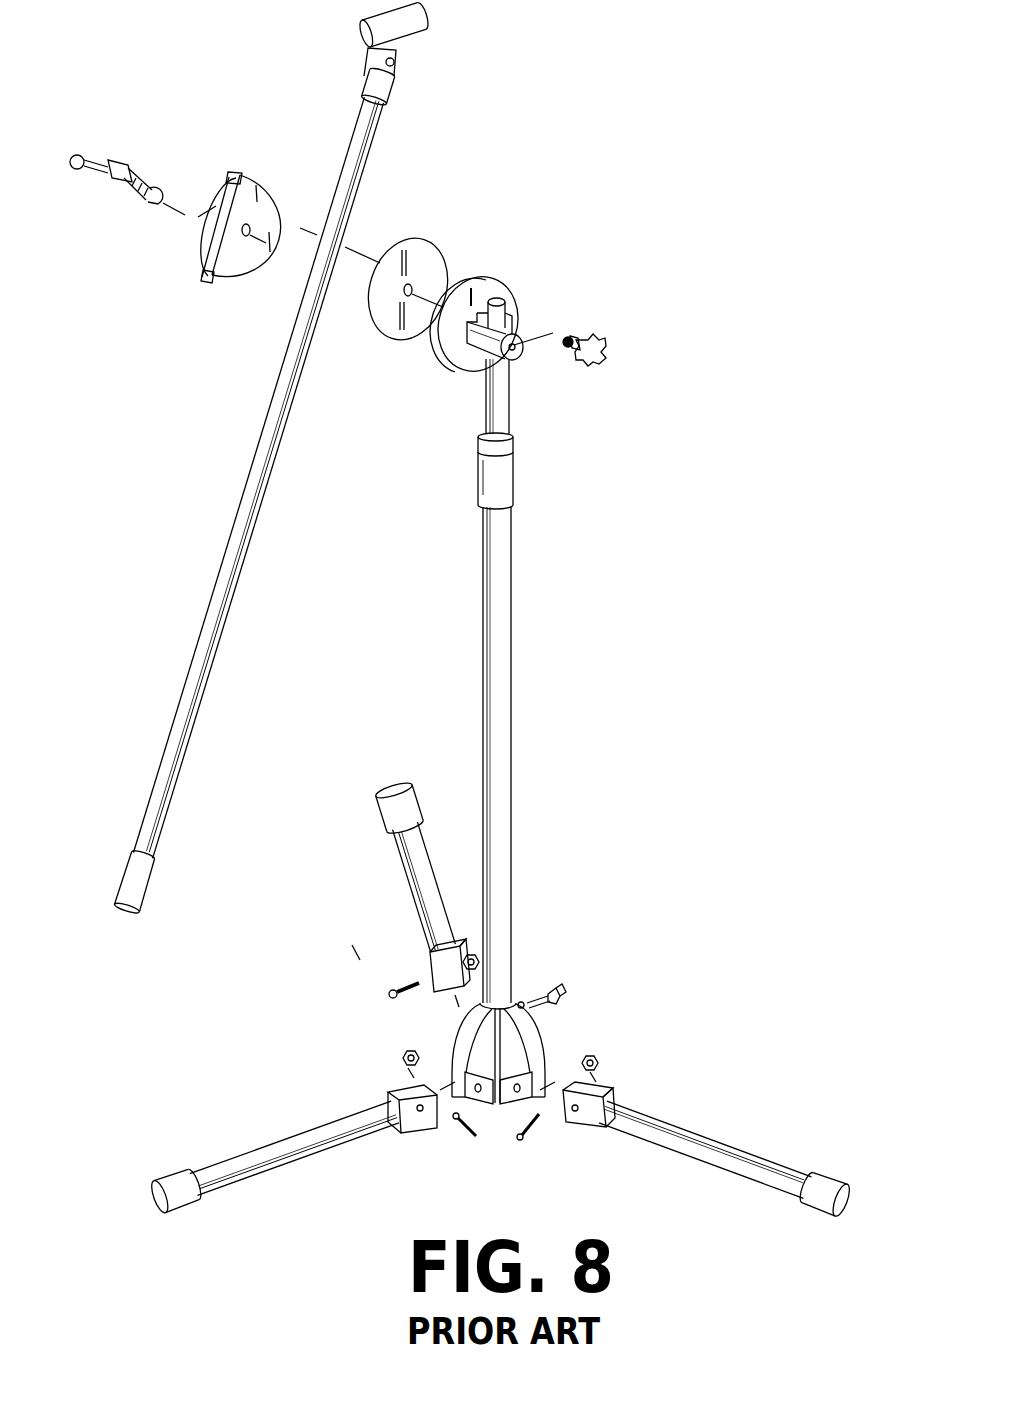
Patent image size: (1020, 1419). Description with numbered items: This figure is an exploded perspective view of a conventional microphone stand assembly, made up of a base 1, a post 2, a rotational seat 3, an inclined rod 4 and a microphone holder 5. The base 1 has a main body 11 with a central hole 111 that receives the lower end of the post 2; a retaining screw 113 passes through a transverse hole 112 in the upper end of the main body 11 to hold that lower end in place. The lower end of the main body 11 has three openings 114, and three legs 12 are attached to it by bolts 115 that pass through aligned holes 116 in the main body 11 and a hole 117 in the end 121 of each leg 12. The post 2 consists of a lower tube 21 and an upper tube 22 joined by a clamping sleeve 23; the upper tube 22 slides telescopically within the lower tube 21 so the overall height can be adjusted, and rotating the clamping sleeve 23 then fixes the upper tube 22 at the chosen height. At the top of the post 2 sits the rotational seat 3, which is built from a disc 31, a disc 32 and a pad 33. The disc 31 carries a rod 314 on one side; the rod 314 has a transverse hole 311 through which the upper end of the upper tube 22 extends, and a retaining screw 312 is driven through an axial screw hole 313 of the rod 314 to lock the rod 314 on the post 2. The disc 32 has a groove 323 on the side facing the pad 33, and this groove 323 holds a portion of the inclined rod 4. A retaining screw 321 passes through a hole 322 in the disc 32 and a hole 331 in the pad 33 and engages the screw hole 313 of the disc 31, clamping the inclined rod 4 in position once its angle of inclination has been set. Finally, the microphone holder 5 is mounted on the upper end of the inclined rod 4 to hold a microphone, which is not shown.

The base 1 is at (500, 1001).
The main body 11 is at (559, 1054).
The central hole 111 is at (520, 1003).
The transverse hole 112 is at (526, 1005).
The retaining screw 113 is at (562, 998).
The openings 114 is at (540, 1100).
The bolts 115 is at (528, 1134).
The aligned holes 116 is at (481, 1092).
The hole 117 is at (423, 1110).
The legs 12 is at (708, 1146).
The end 121 is at (585, 1103).
The post 2 is at (496, 681).
The lower tube 21 is at (502, 607).
The upper tube 22 is at (483, 416).
The clamping sleeve 23 is at (505, 478).
The rotational seat 3 is at (529, 329).
The disc 31 is at (525, 300).
The transverse hole 311 is at (530, 317).
The retaining screw 312 is at (606, 350).
The axial screw hole 313 is at (516, 351).
The rod 314 is at (485, 356).
The pad 33 is at (410, 284).
The hole 331 is at (404, 294).
The disc 32 is at (198, 206).
The retaining screw 321 is at (112, 168).
The hole 322 is at (244, 240).
The groove 323 is at (241, 180).
The inclined rod 4 is at (352, 197).
The microphone holder 5 is at (400, 82).